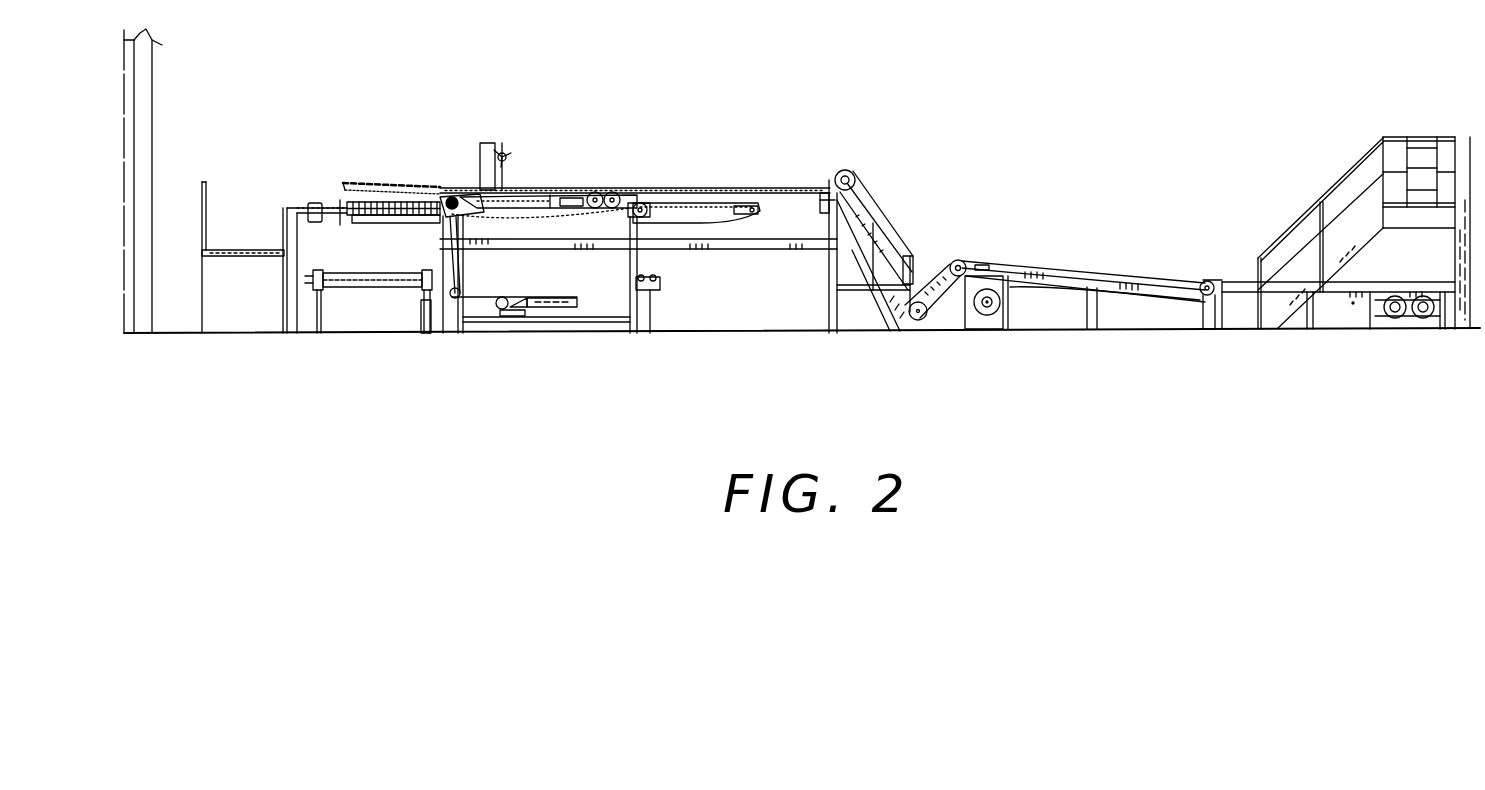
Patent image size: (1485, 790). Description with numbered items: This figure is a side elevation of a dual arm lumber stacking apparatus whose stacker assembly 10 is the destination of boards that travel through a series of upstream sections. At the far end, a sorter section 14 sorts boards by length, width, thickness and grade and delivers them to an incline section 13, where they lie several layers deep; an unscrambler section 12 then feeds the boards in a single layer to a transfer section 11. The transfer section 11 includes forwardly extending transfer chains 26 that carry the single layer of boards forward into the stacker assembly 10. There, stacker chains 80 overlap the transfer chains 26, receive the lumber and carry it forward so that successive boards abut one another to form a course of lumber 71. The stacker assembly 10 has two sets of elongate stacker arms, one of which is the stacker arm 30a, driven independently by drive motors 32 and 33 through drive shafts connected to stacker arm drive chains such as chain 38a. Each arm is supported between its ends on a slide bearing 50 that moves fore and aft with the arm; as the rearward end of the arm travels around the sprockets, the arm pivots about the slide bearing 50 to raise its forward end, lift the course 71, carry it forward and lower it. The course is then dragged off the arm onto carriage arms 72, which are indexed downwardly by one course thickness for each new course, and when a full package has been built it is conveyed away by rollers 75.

The stacker assembly 10 is at (638, 227).
The transfer section 11 is at (744, 189).
The unscrambler section 12 is at (873, 207).
The incline section 13 is at (1010, 265).
The sorter section 14 is at (1357, 335).
The transfer chains 26 is at (803, 192).
The stacker arm 30a is at (623, 198).
The drive motor 32 is at (650, 327).
The drive motor 33 is at (660, 290).
The stacker arm drive chain 38a is at (710, 223).
The slide bearing 50 is at (503, 192).
The course of lumber 71 is at (403, 182).
The carriage arms 72 is at (377, 220).
The rollers 75 is at (398, 282).
The stacker chains 80 is at (507, 217).